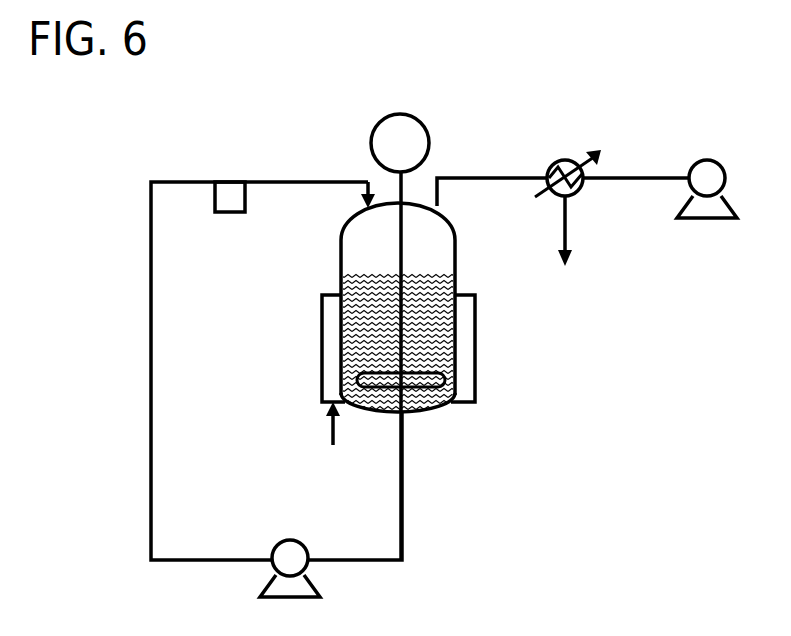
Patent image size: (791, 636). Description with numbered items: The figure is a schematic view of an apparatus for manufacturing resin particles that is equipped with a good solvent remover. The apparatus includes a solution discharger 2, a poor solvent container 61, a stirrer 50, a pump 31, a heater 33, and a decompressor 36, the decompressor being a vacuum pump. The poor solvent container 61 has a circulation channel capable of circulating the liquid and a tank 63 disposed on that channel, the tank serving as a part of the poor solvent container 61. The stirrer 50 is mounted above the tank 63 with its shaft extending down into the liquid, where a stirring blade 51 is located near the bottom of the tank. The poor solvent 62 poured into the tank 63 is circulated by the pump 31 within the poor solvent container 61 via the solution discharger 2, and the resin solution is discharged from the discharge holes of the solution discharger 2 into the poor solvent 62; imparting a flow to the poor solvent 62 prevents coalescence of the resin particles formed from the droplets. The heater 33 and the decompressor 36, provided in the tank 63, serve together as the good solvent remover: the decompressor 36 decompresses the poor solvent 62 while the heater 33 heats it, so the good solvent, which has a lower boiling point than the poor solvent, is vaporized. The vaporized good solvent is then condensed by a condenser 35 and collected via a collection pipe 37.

The solution discharger 2 is at (245, 203).
The pump 31 is at (283, 541).
The heater 33 is at (334, 440).
The condenser 35 is at (562, 160).
The decompressor 36 is at (704, 160).
The collection pipe 37 is at (566, 245).
The stirrer 50 is at (418, 114).
The stirring blade 51 is at (442, 373).
The poor solvent container 61 is at (150, 327).
The poor solvent 62 is at (417, 397).
The tank 63 is at (455, 247).